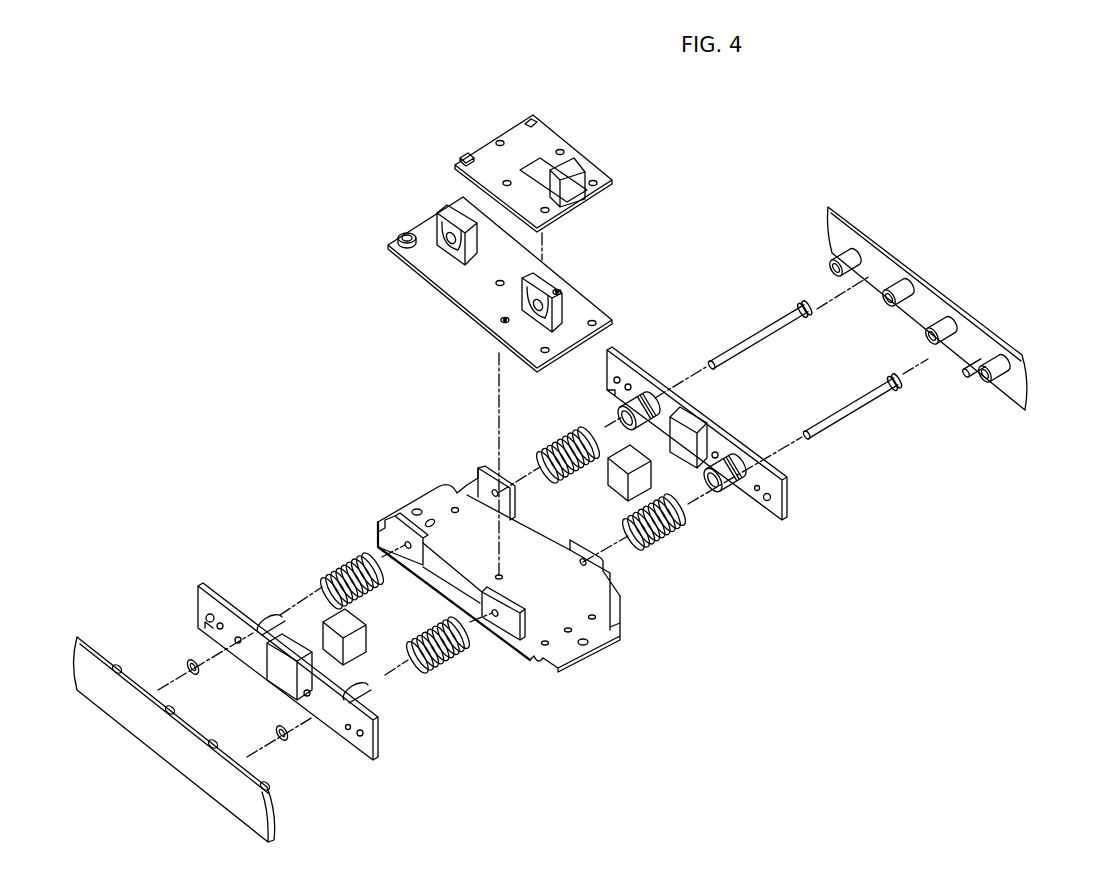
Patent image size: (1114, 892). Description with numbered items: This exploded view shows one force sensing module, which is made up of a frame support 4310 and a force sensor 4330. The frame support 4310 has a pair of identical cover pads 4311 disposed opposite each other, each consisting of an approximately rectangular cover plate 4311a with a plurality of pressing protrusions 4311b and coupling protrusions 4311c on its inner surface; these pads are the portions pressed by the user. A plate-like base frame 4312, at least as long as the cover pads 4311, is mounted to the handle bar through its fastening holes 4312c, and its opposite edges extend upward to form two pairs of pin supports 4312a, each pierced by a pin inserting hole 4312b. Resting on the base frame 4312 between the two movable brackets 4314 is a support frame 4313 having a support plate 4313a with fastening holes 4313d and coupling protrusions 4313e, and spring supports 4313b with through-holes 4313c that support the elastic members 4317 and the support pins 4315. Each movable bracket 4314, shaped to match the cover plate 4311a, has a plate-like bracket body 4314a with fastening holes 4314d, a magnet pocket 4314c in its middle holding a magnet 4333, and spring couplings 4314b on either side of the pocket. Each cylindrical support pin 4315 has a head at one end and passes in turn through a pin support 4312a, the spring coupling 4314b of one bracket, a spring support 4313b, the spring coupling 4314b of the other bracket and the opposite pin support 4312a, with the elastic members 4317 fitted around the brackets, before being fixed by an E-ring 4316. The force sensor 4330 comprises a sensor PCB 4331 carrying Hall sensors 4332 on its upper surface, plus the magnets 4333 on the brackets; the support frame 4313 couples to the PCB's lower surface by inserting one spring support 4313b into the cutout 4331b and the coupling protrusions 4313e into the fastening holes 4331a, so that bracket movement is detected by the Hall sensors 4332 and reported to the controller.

The frame support 4310 is at (842, 654).
The cover pad 4311 is at (77, 630).
The cover plate 4311a is at (888, 268).
The pressing protrusion 4311b is at (898, 293).
The coupling protrusion 4311c is at (977, 358).
The base frame 4312 is at (400, 492).
The pin support 4312a is at (508, 630).
The pin inserting hole 4312b is at (495, 613).
The fastening hole 4312c is at (593, 620).
The support frame 4313 is at (385, 220).
The support plate 4313a is at (437, 267).
The spring support 4313b is at (558, 310).
The through-hole 4313c is at (527, 303).
The fastening hole 4313d is at (495, 285).
The coupling protrusion 4313e is at (503, 323).
The movable bracket 4314 is at (230, 592).
The bracket body 4314a is at (773, 492).
The spring coupling 4314b is at (727, 483).
The magnet pocket 4314c is at (690, 443).
The fastening hole 4314d is at (770, 498).
The support pin 4315 is at (752, 326).
The E-ring 4316 is at (190, 660).
The elastic member 4317 is at (345, 567).
The force sensor 4330 is at (842, 682).
The sensor PCB 4331 is at (546, 140).
The fastening hole 4331a is at (503, 188).
The cutout 4331b is at (546, 166).
The Hall sensor 4332 is at (466, 157).
The magnet 4333 is at (621, 485).